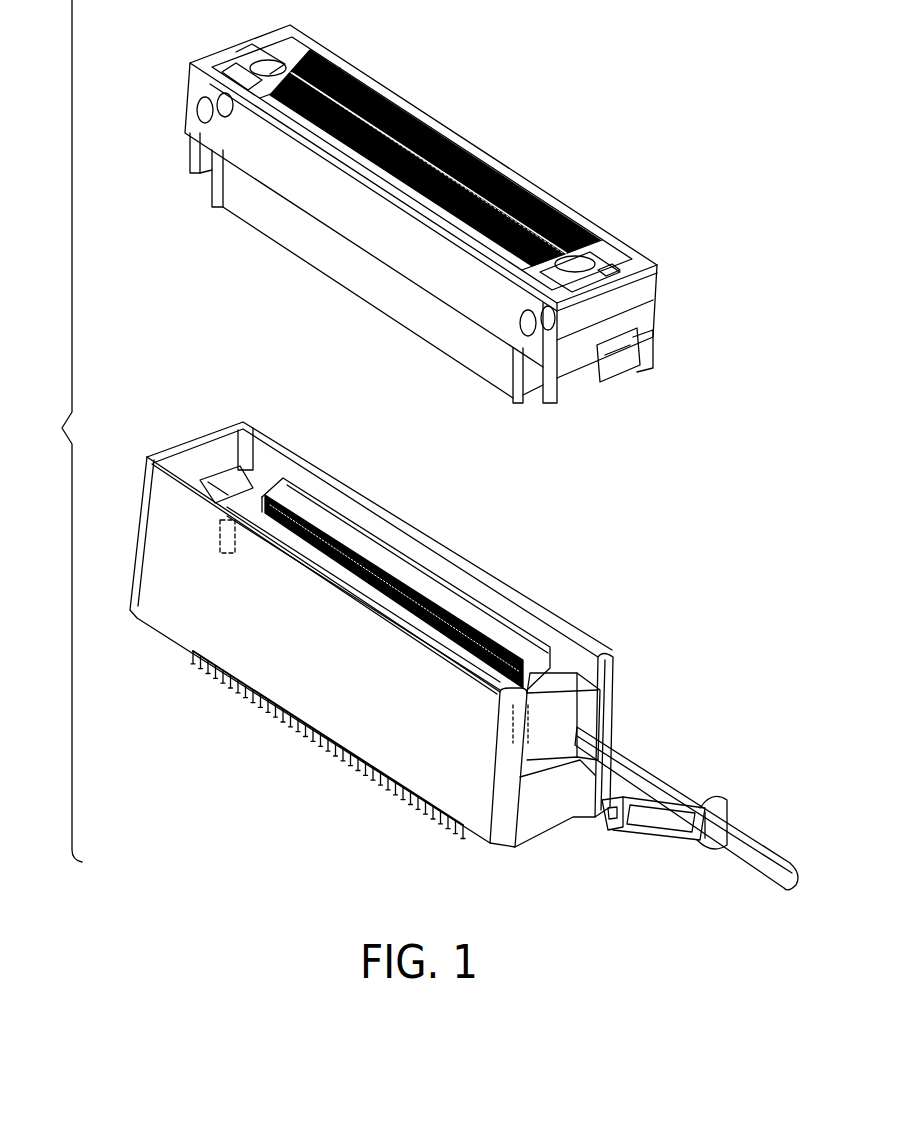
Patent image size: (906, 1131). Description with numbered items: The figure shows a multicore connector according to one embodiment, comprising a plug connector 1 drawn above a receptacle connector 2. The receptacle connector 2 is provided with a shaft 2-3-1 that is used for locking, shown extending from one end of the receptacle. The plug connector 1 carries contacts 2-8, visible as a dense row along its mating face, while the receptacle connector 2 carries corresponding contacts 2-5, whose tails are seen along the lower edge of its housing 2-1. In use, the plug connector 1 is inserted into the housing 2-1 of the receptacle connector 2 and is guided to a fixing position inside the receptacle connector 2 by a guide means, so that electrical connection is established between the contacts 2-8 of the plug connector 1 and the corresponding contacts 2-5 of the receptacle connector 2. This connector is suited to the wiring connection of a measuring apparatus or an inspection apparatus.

The plug connector 1 is at (421, 214).
The receptacle connector 2 is at (464, 656).
The housing 2-1 is at (497, 576).
The shaft 2-3-1 is at (682, 790).
The contacts 2-5 is at (325, 750).
The contacts 2-8 is at (463, 133).